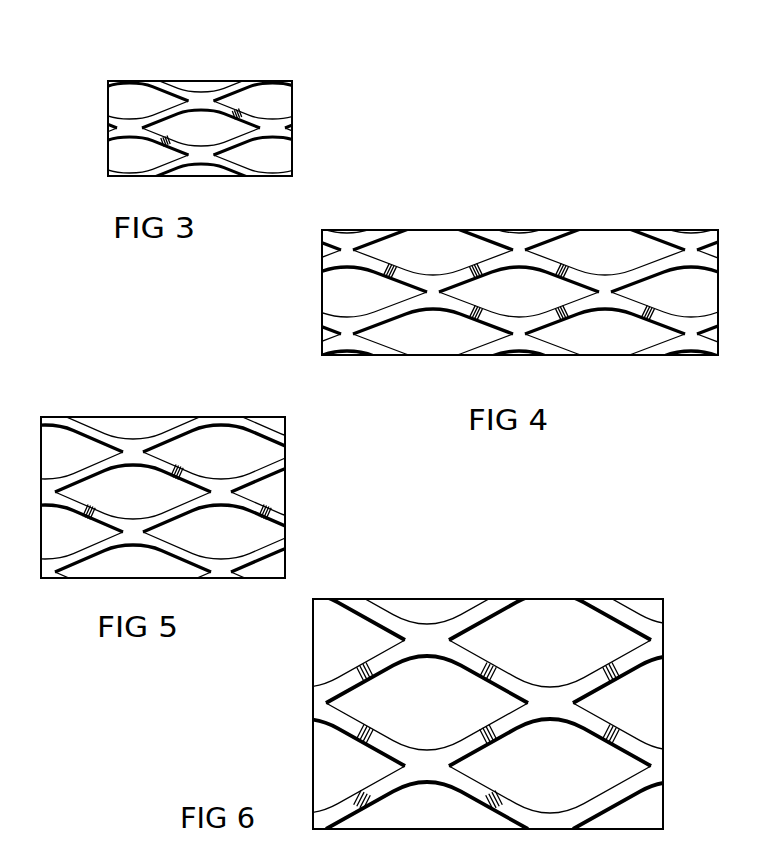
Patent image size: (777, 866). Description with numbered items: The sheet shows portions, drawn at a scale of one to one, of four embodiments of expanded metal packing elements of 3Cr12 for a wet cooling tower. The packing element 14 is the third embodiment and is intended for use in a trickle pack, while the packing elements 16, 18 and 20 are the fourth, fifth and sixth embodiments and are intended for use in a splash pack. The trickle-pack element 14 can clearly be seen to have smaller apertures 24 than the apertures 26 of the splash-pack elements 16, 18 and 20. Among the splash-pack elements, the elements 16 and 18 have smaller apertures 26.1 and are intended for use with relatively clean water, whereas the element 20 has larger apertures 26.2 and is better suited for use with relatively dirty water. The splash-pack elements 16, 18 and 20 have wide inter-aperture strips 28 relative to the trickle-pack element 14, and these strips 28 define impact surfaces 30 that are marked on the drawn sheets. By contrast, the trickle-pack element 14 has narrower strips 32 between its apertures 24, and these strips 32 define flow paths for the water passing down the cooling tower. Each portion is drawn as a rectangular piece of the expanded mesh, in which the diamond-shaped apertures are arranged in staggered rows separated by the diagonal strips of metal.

In FIG. 3, the packing element 14 is at (213, 60).
In FIG. 4, the packing element 16 is at (562, 208).
In FIG. 5, the packing element 18 is at (139, 400).
In FIG. 6, the packing element 20 is at (557, 588).
In FIG. 3, the apertures 24 is at (219, 128).
In FIG. 4, the apertures 26 is at (502, 328).
In FIG. 5, the apertures 26 is at (121, 537).
In FIG. 6, the apertures 26 is at (369, 706).
In FIG. 4, the apertures 26.1 is at (515, 306).
In FIG. 5, the apertures 26.1 is at (139, 512).
In FIG. 6, the apertures 26.2 is at (380, 709).
In FIG. 4, the inter-aperture strips 28 is at (678, 258).
In FIG. 5, the inter-aperture strips 28 is at (313, 495).
In FIG. 6, the inter-aperture strips 28 is at (578, 715).
In FIG. 4, the impact surfaces 30 is at (655, 302).
In FIG. 5, the impact surfaces 30 is at (273, 507).
In FIG. 6, the impact surfaces 30 is at (611, 685).
In FIG. 3, the strips 32 is at (152, 144).